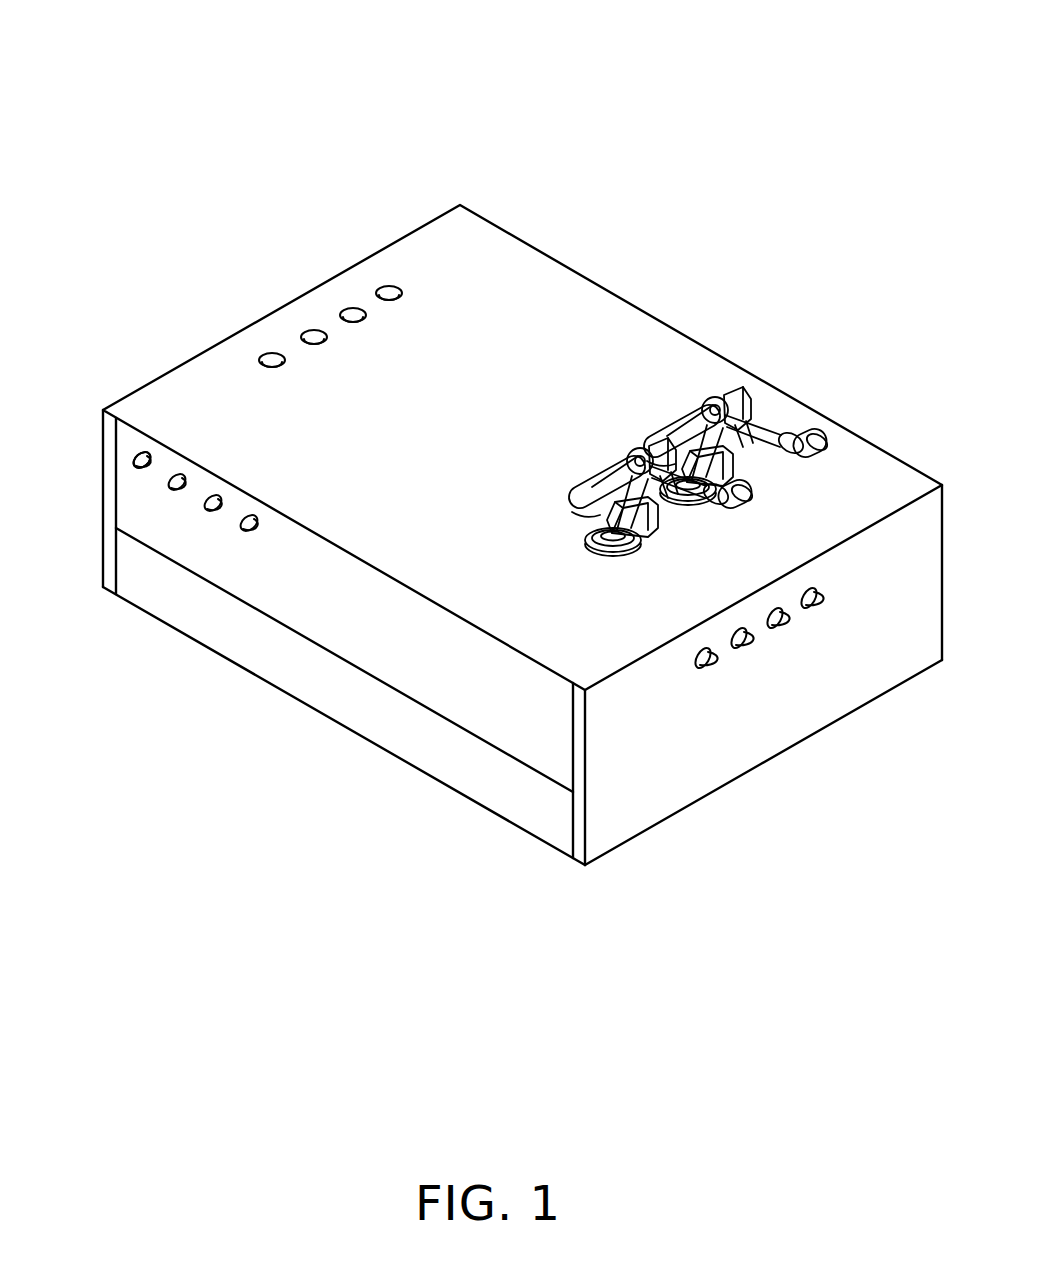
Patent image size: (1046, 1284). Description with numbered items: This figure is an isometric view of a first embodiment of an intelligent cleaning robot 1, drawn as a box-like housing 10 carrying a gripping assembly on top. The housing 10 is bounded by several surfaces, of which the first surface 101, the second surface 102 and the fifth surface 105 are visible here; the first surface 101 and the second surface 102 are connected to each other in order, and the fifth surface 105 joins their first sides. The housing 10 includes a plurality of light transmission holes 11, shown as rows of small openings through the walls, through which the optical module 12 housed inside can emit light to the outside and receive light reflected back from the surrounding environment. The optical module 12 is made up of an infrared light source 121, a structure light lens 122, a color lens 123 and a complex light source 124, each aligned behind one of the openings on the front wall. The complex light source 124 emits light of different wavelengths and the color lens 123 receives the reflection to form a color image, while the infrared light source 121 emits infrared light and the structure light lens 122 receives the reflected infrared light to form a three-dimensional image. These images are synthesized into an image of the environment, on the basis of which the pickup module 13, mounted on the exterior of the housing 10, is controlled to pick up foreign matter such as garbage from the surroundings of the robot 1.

The intelligent cleaning robot 1 is at (488, 62).
The housing 10 is at (628, 300).
The first surface 101 is at (445, 248).
The second surface 102 is at (538, 733).
The fifth surface 105 is at (655, 793).
The light transmission holes 11 is at (133, 463).
The optical module 12 is at (231, 621).
The infrared light source 121 is at (142, 468).
The structure light lens 122 is at (177, 490).
The color lens 123 is at (213, 512).
The complex light source 124 is at (249, 532).
The pickup module 13 is at (735, 393).